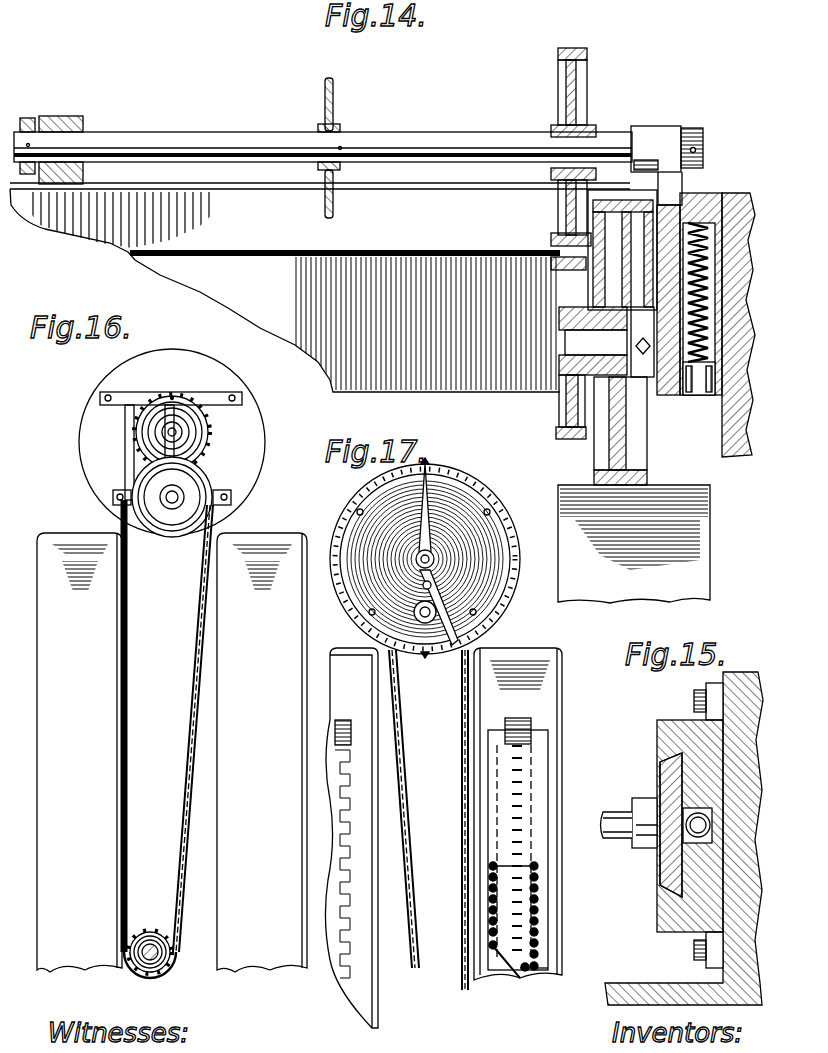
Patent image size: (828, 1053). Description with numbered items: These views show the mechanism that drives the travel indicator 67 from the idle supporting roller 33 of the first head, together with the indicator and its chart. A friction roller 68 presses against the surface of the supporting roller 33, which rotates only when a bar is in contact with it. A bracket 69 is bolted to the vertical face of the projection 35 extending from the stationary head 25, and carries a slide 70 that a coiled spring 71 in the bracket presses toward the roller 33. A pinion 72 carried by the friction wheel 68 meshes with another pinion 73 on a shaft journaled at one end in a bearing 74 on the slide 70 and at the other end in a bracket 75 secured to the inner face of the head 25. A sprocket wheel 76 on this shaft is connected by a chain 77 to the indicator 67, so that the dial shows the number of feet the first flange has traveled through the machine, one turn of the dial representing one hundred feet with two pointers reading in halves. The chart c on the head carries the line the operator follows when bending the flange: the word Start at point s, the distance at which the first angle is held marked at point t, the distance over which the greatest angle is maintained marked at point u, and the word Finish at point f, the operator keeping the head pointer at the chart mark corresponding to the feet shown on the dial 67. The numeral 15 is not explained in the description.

In FIG. 14, the bracket 75 is at (68, 115).
In FIG. 14, the sprocket wheel 76 is at (336, 118).
In FIG. 16, the sprocket wheel 76 is at (145, 925).
In FIG. 14, the bearing 74 is at (660, 130).
In FIG. 15, the bearing 74 is at (632, 848).
In FIG. 14, the slide 70 is at (690, 205).
In FIG. 15, the slide 70 is at (658, 788).
In FIG. 14, the bracket 69 is at (722, 195).
In FIG. 15, the bracket 69 is at (667, 915).
In FIG. 14, the pinion 73 is at (567, 200).
In FIG. 14, the rod 15 is at (638, 276).
In FIG. 14, the projection 35 is at (750, 255).
In FIG. 15, the projection 35 is at (726, 672).
In FIG. 14, the pinion 72 is at (568, 285).
In FIG. 14, the coiled spring 71 is at (704, 330).
In FIG. 15, the coiled spring 71 is at (683, 815).
In FIG. 14, the stationary ring 25 is at (285, 290).
In FIG. 16, the stationary ring 25 is at (172, 752).
In FIG. 17, the stationary ring 25 is at (500, 948).
In FIG. 15, the stationary ring 25 is at (728, 680).
In FIG. 14, the friction roller 68 is at (648, 446).
In FIG. 14, the supporting roller 33 is at (712, 495).
In FIG. 16, the indicator 67 is at (256, 488).
In FIG. 17, the indicator 67 is at (482, 492).
In FIG. 16, the chain 77 is at (195, 720).
In FIG. 17, the chain 77 is at (413, 757).
In FIG. 17, the chart c is at (540, 800).
In FIG. 17, the point u is at (540, 865).
In FIG. 17, the point t is at (502, 945).
In FIG. 17, the point s is at (506, 950).
In FIG. 17, the point f is at (526, 970).